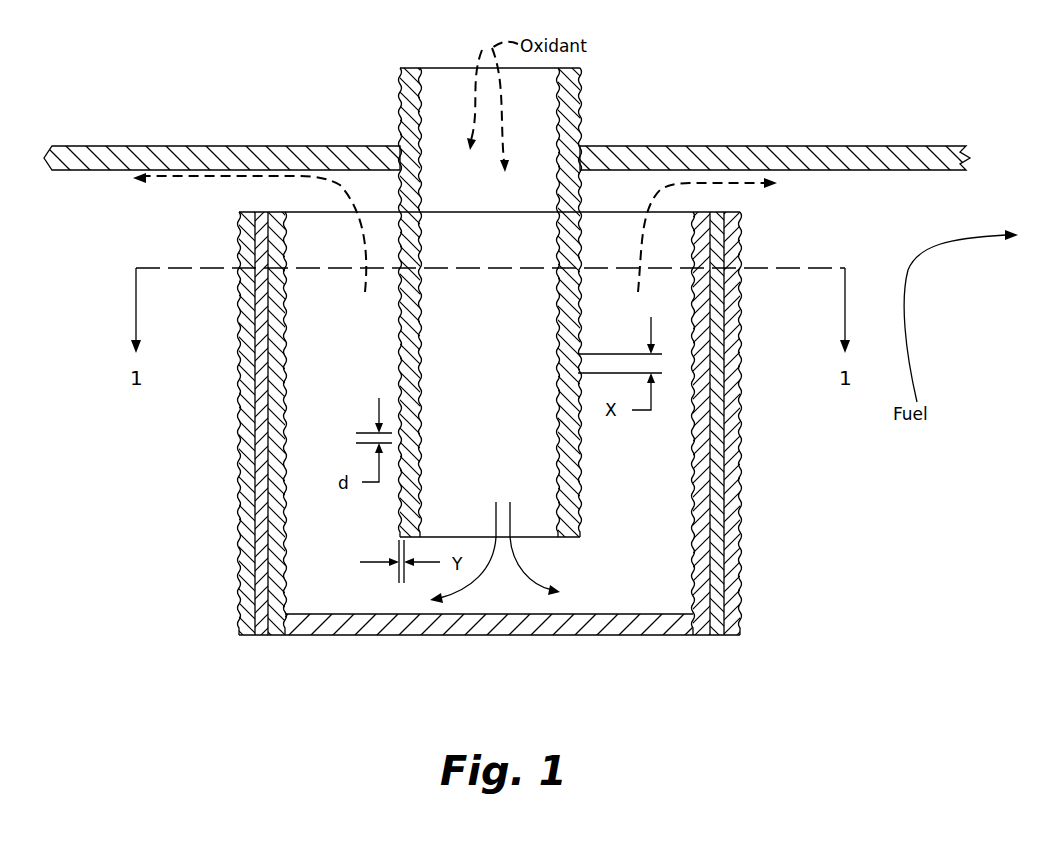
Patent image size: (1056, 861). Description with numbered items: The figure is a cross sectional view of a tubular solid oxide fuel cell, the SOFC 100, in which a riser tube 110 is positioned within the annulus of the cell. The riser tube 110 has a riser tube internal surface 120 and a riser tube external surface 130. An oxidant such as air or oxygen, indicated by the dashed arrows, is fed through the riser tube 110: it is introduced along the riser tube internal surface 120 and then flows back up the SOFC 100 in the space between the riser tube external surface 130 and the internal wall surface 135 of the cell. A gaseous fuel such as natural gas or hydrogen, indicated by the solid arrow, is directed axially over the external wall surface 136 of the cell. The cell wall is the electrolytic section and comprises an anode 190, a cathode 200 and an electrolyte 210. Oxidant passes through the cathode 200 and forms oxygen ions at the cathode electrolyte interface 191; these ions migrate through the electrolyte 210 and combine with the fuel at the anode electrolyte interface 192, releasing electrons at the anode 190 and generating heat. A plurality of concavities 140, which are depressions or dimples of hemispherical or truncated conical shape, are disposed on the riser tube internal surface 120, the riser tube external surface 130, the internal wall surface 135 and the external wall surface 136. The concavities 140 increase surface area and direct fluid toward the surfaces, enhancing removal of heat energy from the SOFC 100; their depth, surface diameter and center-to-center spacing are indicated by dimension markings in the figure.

The solid oxide fuel cell 100 is at (322, 99).
The riser tube 110 is at (593, 104).
The riser tube internal surface 120 is at (433, 383).
The riser tube external surface 130 is at (371, 371).
The internal wall surface 135 is at (291, 362).
The external wall surface 136 is at (225, 460).
The concavities 140 is at (237, 548).
The anode 190 is at (250, 212).
The cathode electrolyte interface 191 is at (265, 650).
The anode electrolyte interface 192 is at (251, 650).
The cathode 200 is at (277, 212).
The electrolyte 210 is at (258, 212).